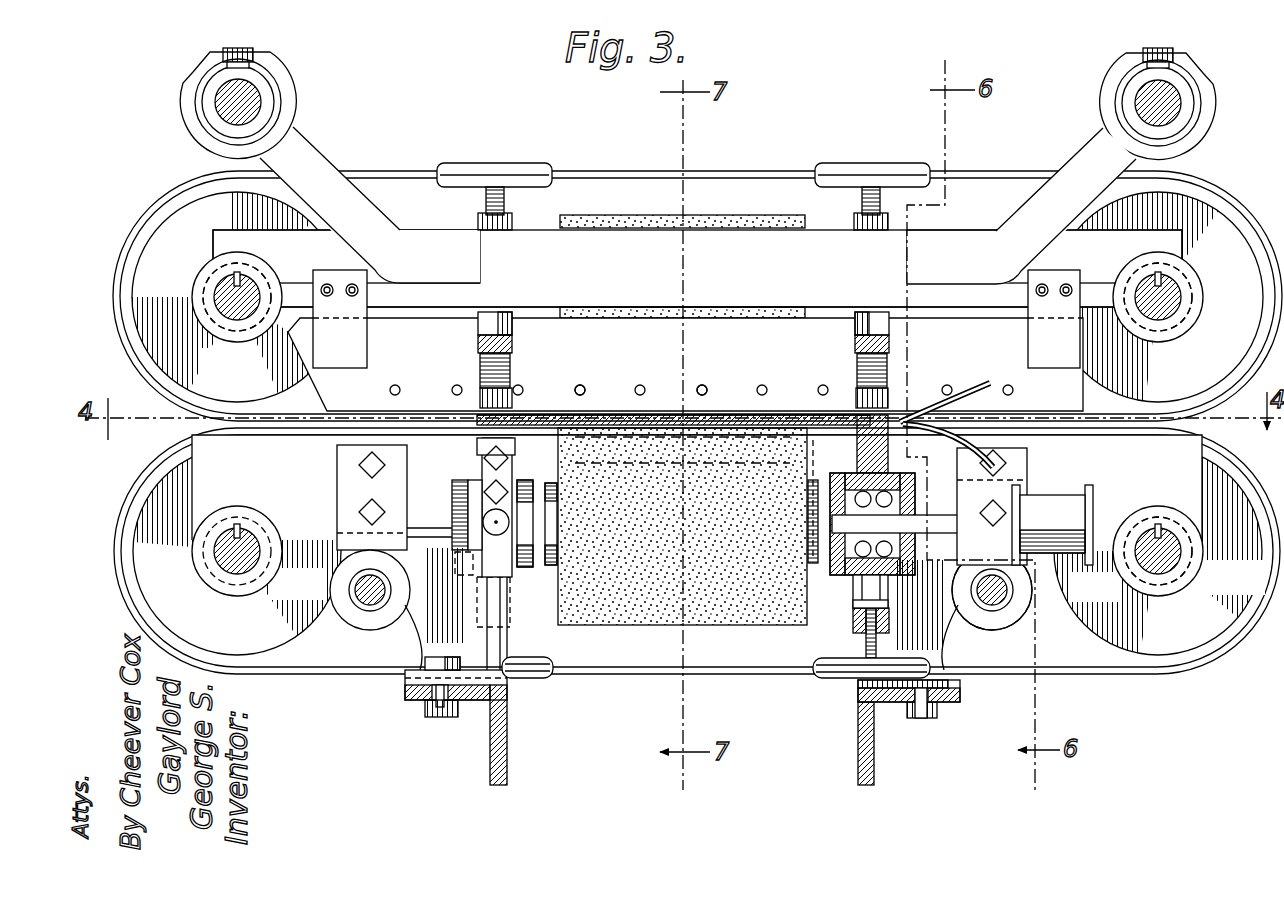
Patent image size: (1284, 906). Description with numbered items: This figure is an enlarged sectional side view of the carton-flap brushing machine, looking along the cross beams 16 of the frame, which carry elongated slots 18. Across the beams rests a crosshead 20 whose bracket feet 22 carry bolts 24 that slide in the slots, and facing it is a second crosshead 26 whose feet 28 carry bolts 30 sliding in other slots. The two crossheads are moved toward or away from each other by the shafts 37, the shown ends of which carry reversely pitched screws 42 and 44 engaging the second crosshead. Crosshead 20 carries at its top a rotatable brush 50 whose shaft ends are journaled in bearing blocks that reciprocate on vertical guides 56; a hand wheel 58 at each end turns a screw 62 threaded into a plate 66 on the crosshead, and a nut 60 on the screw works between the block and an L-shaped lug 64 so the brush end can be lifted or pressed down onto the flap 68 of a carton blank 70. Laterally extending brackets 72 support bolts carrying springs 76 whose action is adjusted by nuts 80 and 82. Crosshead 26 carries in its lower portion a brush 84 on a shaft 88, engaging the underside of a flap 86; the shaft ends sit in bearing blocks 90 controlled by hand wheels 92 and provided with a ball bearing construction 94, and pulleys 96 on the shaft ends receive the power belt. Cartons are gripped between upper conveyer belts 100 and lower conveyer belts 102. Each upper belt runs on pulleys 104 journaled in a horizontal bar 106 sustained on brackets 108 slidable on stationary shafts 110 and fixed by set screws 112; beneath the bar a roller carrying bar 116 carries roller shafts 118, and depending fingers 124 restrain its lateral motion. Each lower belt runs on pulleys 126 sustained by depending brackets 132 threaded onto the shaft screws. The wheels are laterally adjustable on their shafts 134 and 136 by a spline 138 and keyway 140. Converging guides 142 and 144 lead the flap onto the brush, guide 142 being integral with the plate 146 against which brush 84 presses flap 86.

The cross beam 16 is at (498, 740).
The elongated slot 18 is at (428, 710).
The crosshead 20 is at (962, 690).
The bracket foot 22 is at (960, 692).
The bolt 24 is at (925, 722).
The crosshead 26 is at (466, 602).
The foot 28 is at (405, 683).
The bolt 30 is at (445, 716).
The shaft 37 is at (368, 600).
The screw 42 is at (350, 588).
The screw 44 is at (1010, 590).
The brush 50 is at (725, 226).
The vertical guide 56 is at (868, 448).
The hand wheel 58 is at (505, 162).
The nut 60 is at (895, 560).
The screw 62 is at (506, 202).
The L-shaped lug 64 is at (888, 592).
The plate 66 is at (478, 225).
The flap 68 is at (972, 514).
The carton blank 70 is at (540, 428).
The bracket 72 is at (478, 344).
The spring 76 is at (512, 364).
The nut 80 is at (523, 390).
The nut 82 is at (515, 332).
The brush 84 is at (725, 626).
The flap 86 is at (603, 416).
The shaft 88 is at (996, 506).
The bearing block 90 is at (515, 570).
The hand wheel 92 is at (545, 680).
The ball bearing construction 94 is at (850, 600).
The pulley 96 is at (1060, 495).
The upper conveyer belt 100 is at (648, 176).
The lower conveyer belt 102 is at (345, 428).
The pulley 104 is at (697, 297).
The horizontal bar 106 is at (697, 268).
The bracket 108 is at (302, 150).
The stationary shaft 110 is at (260, 95).
The set screw 112 is at (240, 47).
The roller carrying bar 116 is at (697, 359).
The roller shaft 118 is at (522, 390).
The depending finger 124 is at (347, 344).
The pulley 126 is at (335, 470).
The depending bracket 132 is at (345, 515).
The shaft 134 is at (237, 310).
The shaft 136 is at (225, 560).
The spline 138 is at (240, 276).
The keyway 140 is at (255, 285).
The converging guide 142 is at (983, 380).
The converging guide 144 is at (1000, 440).
The plate 146 is at (725, 416).